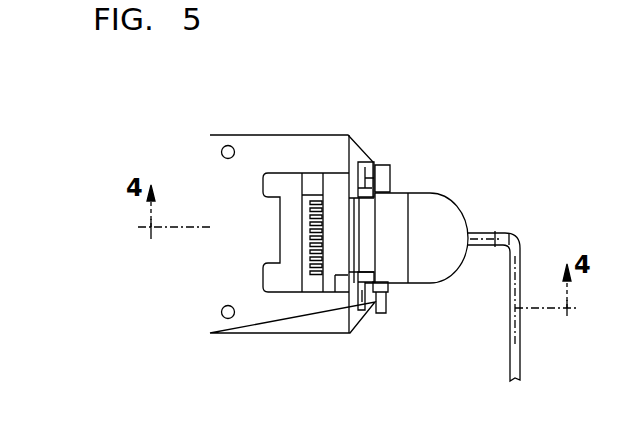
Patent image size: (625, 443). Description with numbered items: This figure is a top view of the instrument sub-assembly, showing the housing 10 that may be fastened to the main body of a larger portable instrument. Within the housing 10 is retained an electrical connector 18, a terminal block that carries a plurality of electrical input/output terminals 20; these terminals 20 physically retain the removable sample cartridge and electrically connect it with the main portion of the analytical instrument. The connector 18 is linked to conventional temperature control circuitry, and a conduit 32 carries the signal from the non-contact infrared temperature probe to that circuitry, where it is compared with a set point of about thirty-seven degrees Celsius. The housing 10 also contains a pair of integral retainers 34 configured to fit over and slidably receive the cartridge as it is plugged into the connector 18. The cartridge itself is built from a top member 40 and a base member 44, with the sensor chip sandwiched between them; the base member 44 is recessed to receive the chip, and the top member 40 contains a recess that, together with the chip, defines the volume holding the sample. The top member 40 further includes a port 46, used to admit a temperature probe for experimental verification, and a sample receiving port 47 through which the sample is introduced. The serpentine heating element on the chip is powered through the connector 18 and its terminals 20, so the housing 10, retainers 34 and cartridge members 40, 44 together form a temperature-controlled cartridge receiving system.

The instrument sub-assembly housing 10 is at (203, 184).
The electrical connector 18 is at (328, 288).
The electrical input/output terminals 20 is at (314, 263).
The conduit 32 is at (482, 230).
The integral retainers 34 is at (368, 162).
The top member 40 is at (392, 212).
The base member 44 is at (440, 212).
The port 46 is at (385, 306).
The sample receiving port 47 is at (380, 163).